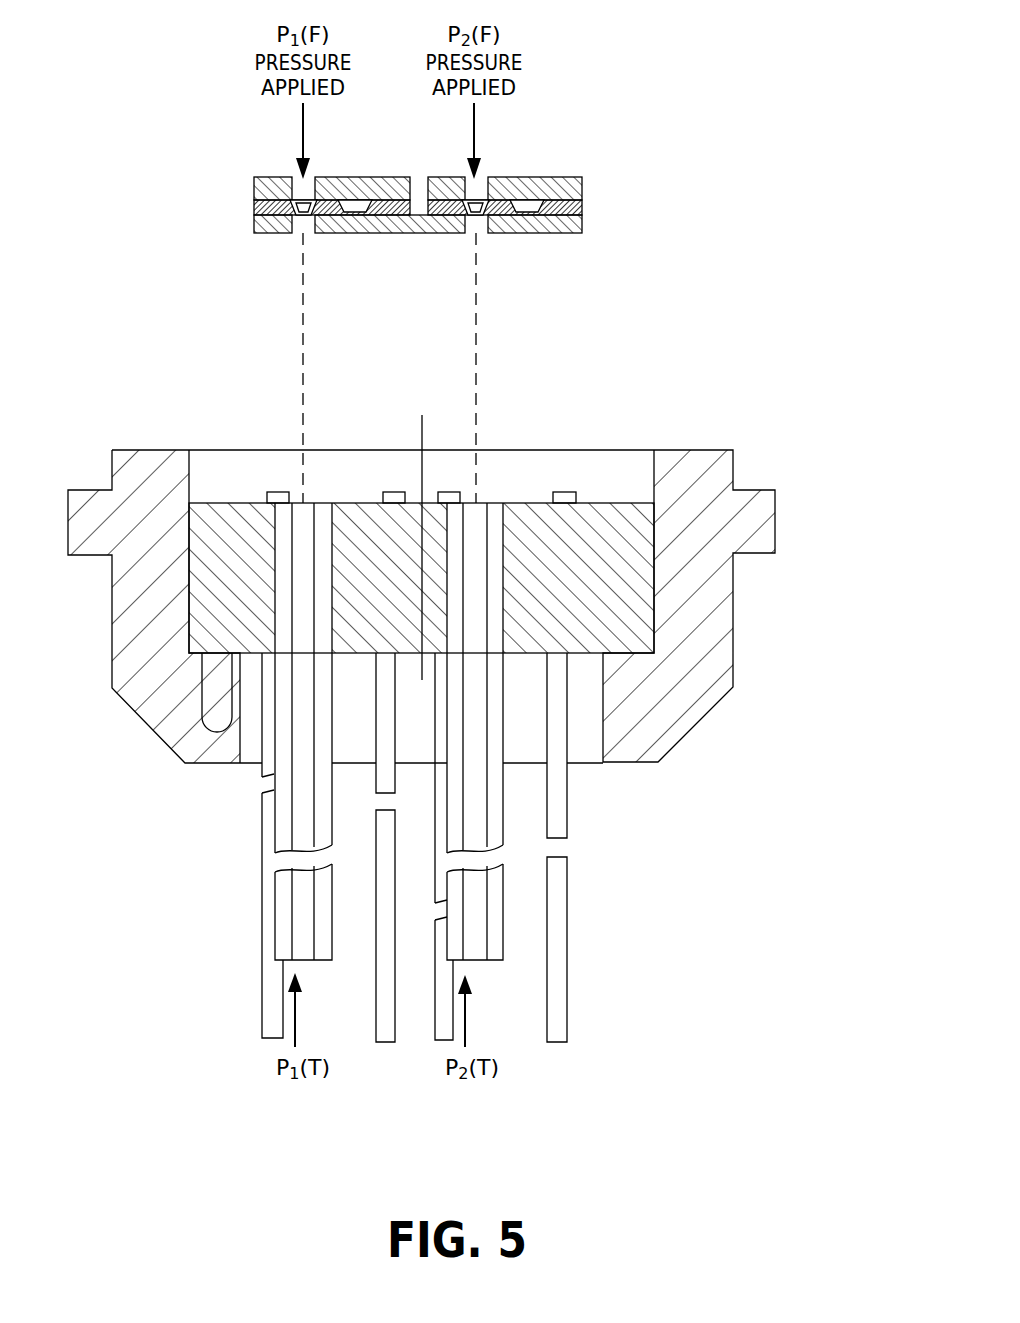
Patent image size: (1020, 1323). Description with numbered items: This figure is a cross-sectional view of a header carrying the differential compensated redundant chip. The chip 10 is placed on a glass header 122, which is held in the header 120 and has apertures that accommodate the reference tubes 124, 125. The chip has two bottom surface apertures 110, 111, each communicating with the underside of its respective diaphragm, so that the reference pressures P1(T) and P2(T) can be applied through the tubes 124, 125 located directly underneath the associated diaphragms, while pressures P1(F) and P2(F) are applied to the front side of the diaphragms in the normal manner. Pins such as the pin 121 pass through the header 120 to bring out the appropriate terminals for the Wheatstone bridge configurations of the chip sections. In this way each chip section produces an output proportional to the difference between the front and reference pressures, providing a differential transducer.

The chip section 10 is at (620, 214).
The bottom surface aperture 110 is at (300, 232).
The bottom surface aperture 111 is at (480, 232).
The header 120 is at (752, 608).
The pin 121 is at (556, 893).
The glass header 122 is at (437, 1034).
The reference tube 124 is at (296, 796).
The reference tube 125 is at (471, 813).